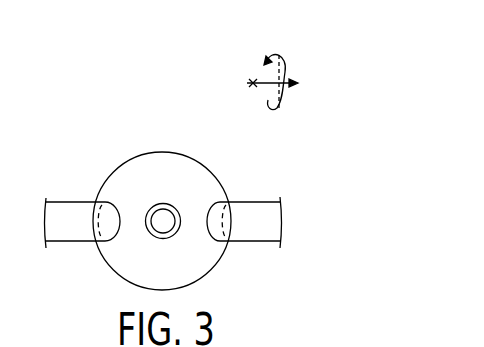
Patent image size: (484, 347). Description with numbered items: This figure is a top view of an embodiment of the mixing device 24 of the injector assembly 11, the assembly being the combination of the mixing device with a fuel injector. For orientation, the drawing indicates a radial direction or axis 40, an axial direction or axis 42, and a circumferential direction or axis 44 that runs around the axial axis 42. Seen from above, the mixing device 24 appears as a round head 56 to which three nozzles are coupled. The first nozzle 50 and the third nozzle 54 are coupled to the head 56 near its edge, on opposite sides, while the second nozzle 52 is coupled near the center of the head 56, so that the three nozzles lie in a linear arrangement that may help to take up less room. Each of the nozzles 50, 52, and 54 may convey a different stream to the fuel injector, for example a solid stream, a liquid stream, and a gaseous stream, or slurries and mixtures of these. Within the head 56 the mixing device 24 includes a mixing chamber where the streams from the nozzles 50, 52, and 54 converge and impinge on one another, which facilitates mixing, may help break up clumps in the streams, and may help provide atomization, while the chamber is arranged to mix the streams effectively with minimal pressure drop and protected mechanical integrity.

The injector assembly 11 is at (230, 276).
The mixing device 24 is at (175, 87).
The radial axis 40 is at (290, 90).
The axial axis 42 is at (253, 89).
The circumferential axis 44 is at (280, 62).
The first nozzle 50 is at (67, 202).
The second nozzle 52 is at (162, 203).
The third nozzle 54 is at (255, 202).
The head 56 is at (177, 155).